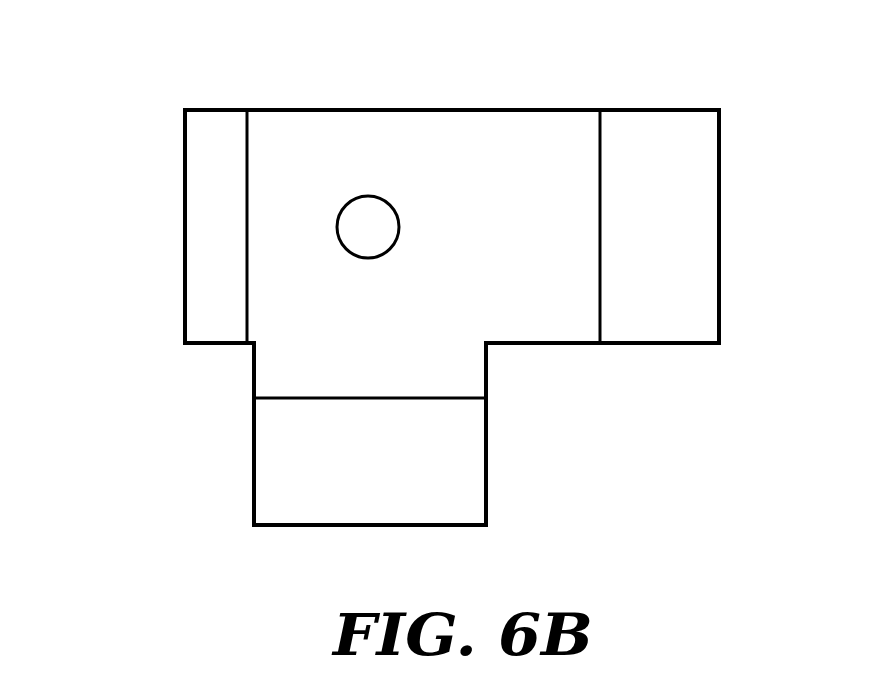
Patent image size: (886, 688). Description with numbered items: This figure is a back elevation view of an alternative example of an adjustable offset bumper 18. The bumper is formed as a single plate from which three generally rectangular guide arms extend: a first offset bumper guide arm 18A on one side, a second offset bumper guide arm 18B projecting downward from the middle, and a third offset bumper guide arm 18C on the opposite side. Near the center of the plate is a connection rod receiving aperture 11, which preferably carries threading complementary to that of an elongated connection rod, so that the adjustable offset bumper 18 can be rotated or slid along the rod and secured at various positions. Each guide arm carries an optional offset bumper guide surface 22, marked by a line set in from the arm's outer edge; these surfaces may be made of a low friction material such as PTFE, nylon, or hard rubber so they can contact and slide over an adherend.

The adjustable offset bumper 18 is at (60, 97).
The first offset bumper guide arm 18A is at (747, 232).
The second offset bumper guide arm 18B is at (228, 483).
The third offset bumper guide arm 18C is at (157, 229).
The offset bumper guide surface 22 is at (222, 190).
The connection rod receiving aperture 11 is at (366, 225).